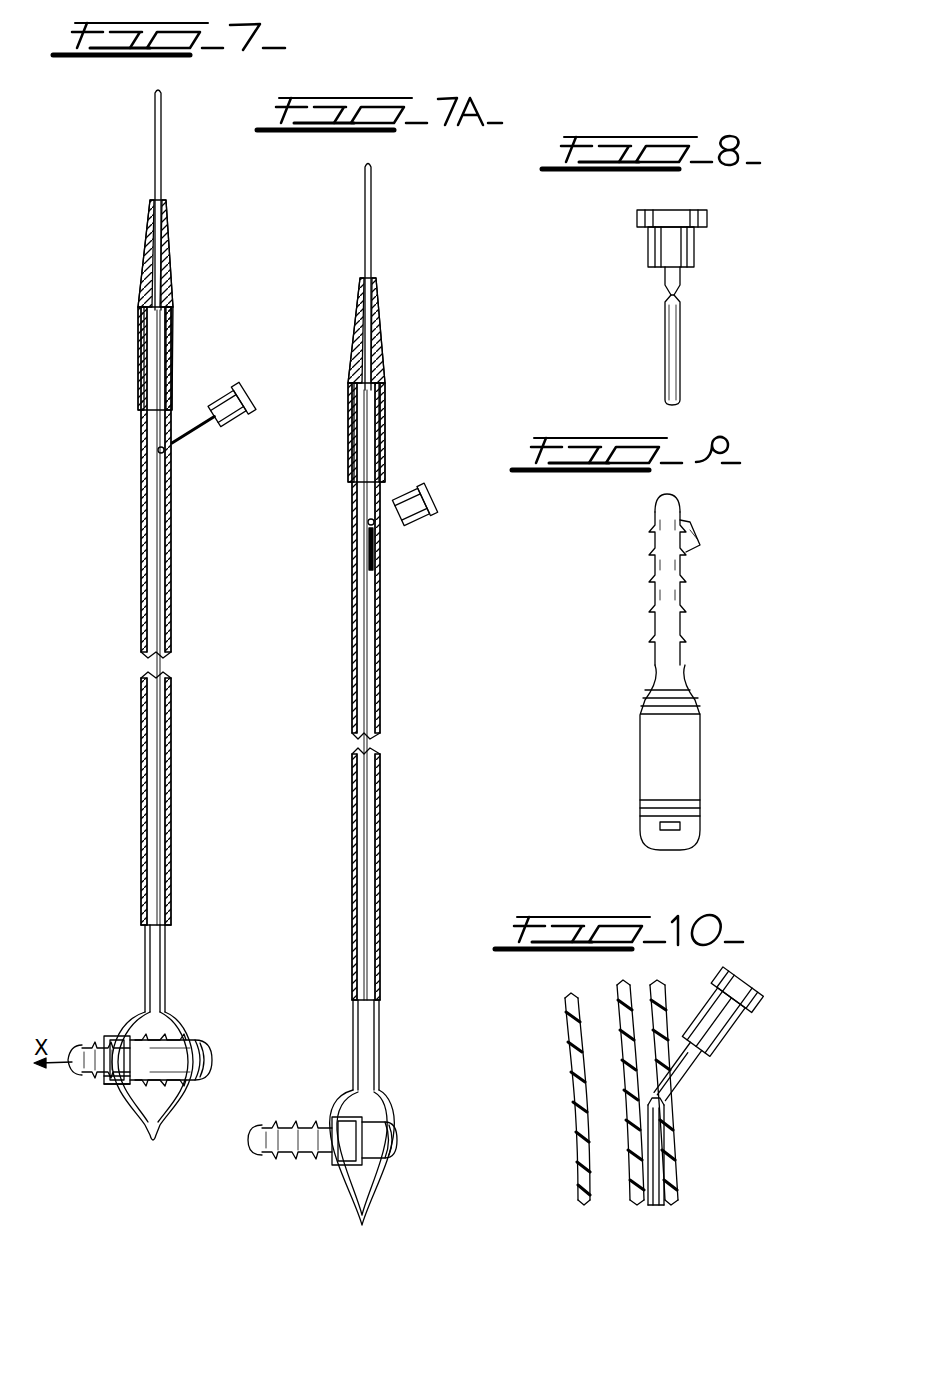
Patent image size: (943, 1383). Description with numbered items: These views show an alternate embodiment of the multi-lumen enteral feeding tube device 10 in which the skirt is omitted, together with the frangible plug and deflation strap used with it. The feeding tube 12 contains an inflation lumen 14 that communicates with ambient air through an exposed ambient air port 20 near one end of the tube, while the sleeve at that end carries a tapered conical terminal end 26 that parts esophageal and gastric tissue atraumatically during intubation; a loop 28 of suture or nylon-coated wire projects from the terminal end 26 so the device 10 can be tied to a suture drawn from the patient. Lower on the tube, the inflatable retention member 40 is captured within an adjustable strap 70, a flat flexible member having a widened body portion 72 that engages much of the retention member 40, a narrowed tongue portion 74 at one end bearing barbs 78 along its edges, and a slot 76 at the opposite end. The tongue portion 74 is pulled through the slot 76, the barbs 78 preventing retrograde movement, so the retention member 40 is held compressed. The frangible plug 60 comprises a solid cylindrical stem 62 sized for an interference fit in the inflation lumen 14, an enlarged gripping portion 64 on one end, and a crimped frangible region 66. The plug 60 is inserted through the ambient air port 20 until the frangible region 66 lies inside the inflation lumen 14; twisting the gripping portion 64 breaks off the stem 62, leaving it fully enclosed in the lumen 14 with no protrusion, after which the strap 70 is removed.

In FIG. 7, the multi-lumen enteral feeding tube device 10 is at (136, 633).
In FIG. 7A, the multi-lumen enteral feeding tube device 10 is at (349, 693).
In FIG. 10, the feeding tube 12 is at (677, 1142).
In FIG. 7, the inflation lumen 14 is at (166, 535).
In FIG. 7, the ambient air port 20 is at (164, 452).
In FIG. 7, the tapered conical terminal end 26 is at (172, 258).
In FIG. 7A, the tapered conical terminal end 26 is at (382, 330).
In FIG. 7, the loop 28 is at (161, 150).
In FIG. 7A, the loop 28 is at (372, 203).
In FIG. 7, the retention member 40 is at (174, 1024).
In FIG. 7A, the retention member 40 is at (380, 1106).
In FIG. 7, the frangible plug 60 is at (207, 429).
In FIG. 8, the frangible plug 60 is at (680, 306).
In FIG. 7A, the stem 62 is at (373, 548).
In FIG. 8, the stem 62 is at (682, 352).
In FIG. 10, the stem 62 is at (652, 1168).
In FIG. 7A, the gripping portion 64 is at (432, 496).
In FIG. 8, the gripping portion 64 is at (646, 248).
In FIG. 10, the gripping portion 64 is at (785, 1024).
In FIG. 8, the frangible region 66 is at (706, 285).
In FIG. 10, the frangible region 66 is at (652, 1103).
In FIG. 7, the adjustable strap 70 is at (193, 1046).
In FIG. 7A, the adjustable strap 70 is at (398, 1142).
In FIG. 9, the adjustable strap 70 is at (702, 664).
In FIG. 7, the body portion 72 is at (170, 1060).
In FIG. 9, the body portion 72 is at (690, 745).
In FIG. 7, the tongue portion 74 is at (80, 1066).
In FIG. 7A, the tongue portion 74 is at (265, 1150).
In FIG. 9, the tongue portion 74 is at (680, 511).
In FIG. 7, the slot 76 is at (110, 1084).
In FIG. 9, the slot 76 is at (690, 845).
In FIG. 7, the barbs 78 is at (108, 1042).
In FIG. 9, the barbs 78 is at (700, 546).